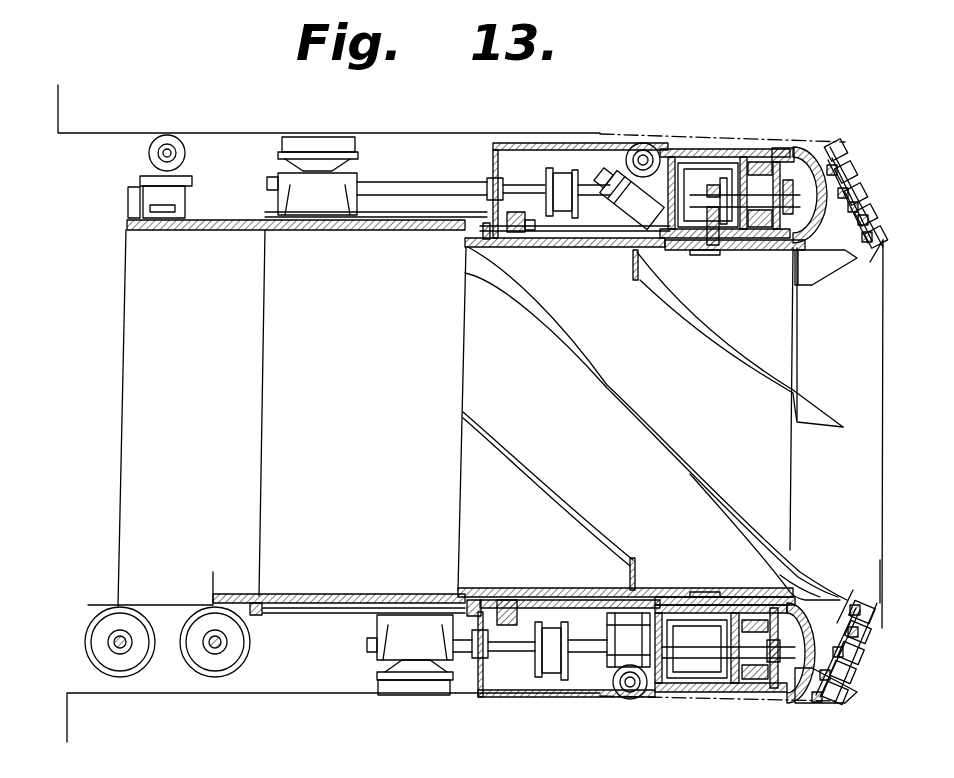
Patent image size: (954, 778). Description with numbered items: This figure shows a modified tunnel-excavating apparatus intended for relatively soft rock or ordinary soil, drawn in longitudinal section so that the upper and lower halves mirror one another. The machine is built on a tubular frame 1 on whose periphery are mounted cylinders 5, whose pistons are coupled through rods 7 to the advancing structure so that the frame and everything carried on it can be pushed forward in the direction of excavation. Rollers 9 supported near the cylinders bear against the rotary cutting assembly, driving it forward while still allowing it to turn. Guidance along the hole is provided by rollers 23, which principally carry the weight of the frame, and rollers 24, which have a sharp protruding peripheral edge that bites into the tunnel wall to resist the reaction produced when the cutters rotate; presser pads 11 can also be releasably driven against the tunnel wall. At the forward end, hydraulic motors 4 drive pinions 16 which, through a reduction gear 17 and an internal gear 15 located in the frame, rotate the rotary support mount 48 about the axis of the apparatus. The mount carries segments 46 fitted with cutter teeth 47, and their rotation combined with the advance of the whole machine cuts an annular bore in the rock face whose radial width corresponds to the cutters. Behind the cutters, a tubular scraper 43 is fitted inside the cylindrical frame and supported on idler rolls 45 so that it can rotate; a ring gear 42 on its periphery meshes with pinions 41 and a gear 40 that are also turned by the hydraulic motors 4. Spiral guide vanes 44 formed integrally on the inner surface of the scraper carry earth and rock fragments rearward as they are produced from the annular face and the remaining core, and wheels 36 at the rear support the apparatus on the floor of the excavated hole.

The frame 1 is at (356, 231).
The hydraulic motor 4 is at (652, 203).
The cylinder 5 is at (562, 172).
The rod 7 is at (420, 183).
The roller 9 is at (778, 250).
The presser pad 11 is at (330, 137).
The internal gear 15 is at (800, 598).
The pinion 16 is at (800, 165).
The gearbox 17 is at (735, 185).
The roller 23 is at (190, 133).
The roller 24 is at (645, 142).
The wheels 36 is at (175, 700).
The gear 40 is at (713, 187).
The pinion 41 is at (725, 250).
The ring gear 42 is at (715, 255).
The tubular scraper 43 is at (478, 374).
The spiral guide vane 44 is at (543, 507).
The idler roll 45 is at (523, 250).
The segment 46 is at (830, 262).
The cutter tooth 47 is at (880, 205).
The rotary support mount 48 is at (858, 262).